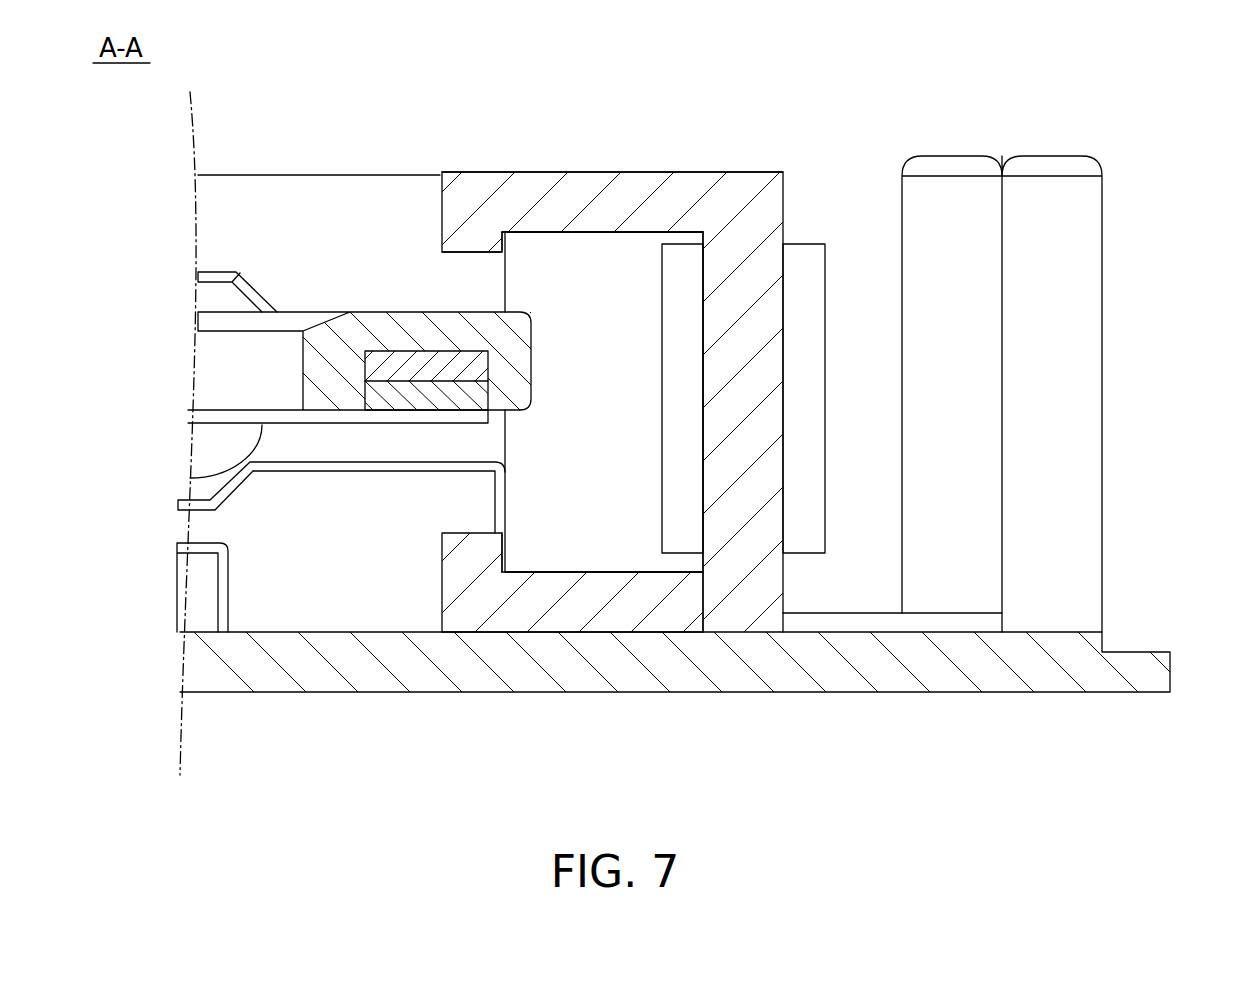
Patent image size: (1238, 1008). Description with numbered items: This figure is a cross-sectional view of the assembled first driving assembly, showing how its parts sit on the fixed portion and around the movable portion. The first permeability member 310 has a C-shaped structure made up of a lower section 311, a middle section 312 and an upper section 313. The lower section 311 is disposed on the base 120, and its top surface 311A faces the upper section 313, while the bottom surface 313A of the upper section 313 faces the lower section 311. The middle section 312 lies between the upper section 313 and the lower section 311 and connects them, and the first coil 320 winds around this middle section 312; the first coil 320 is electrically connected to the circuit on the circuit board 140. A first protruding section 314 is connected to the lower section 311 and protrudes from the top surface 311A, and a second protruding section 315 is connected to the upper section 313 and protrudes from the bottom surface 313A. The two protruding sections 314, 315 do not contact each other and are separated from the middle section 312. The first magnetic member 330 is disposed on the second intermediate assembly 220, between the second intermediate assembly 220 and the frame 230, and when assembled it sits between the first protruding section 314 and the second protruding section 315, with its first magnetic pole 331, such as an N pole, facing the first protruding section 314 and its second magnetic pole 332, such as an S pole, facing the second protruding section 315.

The base 120 is at (1088, 668).
The circuit board 140 is at (245, 200).
The second intermediate assembly 220 is at (252, 418).
The frame 230 is at (327, 322).
The first permeability member 310 is at (732, 172).
The lower section 311 is at (640, 600).
The top surface 311A is at (602, 572).
The middle section 312 is at (760, 407).
The upper section 313 is at (612, 195).
The bottom surface 313A is at (550, 242).
The first protruding section 314 is at (473, 558).
The second protruding section 315 is at (470, 247).
The first coil 320 is at (807, 365).
The first magnetic member 330 is at (363, 370).
The first magnetic pole 331 is at (385, 400).
The second magnetic pole 332 is at (362, 357).